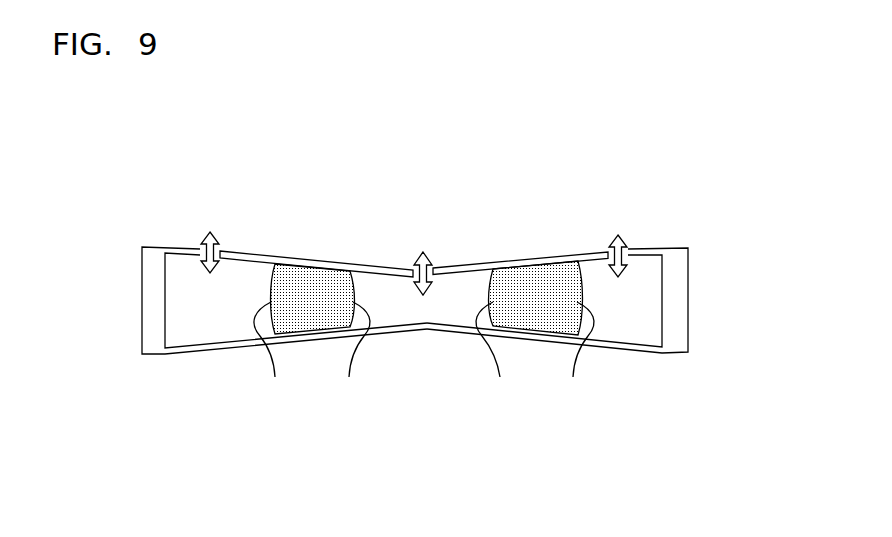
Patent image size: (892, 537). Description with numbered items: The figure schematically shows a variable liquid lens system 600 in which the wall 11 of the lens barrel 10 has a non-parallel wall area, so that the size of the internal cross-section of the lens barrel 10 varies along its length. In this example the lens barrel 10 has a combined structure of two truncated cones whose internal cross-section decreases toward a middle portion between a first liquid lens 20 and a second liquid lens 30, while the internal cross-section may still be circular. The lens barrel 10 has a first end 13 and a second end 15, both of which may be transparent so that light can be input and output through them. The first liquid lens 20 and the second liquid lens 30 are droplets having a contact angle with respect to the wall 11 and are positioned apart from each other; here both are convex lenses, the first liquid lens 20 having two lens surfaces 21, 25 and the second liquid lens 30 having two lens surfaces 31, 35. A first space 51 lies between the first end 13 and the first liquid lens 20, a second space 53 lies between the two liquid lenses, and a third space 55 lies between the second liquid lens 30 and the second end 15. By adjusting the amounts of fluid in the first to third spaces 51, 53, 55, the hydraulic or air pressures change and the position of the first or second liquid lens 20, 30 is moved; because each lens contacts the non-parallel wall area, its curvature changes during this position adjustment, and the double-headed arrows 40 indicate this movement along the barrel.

The variable liquid lens system 600 is at (744, 124).
The lens barrel 10 is at (697, 240).
The wall 11 is at (397, 270).
The first end 13 is at (150, 302).
The second end 15 is at (682, 302).
The first liquid lens 20 is at (314, 275).
The lens surface 21 is at (270, 350).
The lens surface 25 is at (353, 350).
The second liquid lens 30 is at (532, 275).
The lens surface 31 is at (493, 350).
The lens surface 35 is at (578, 350).
The vibration direction arrow 40 is at (219, 250).
The first space 51 is at (229, 310).
The second space 53 is at (437, 313).
The third space 55 is at (609, 310).